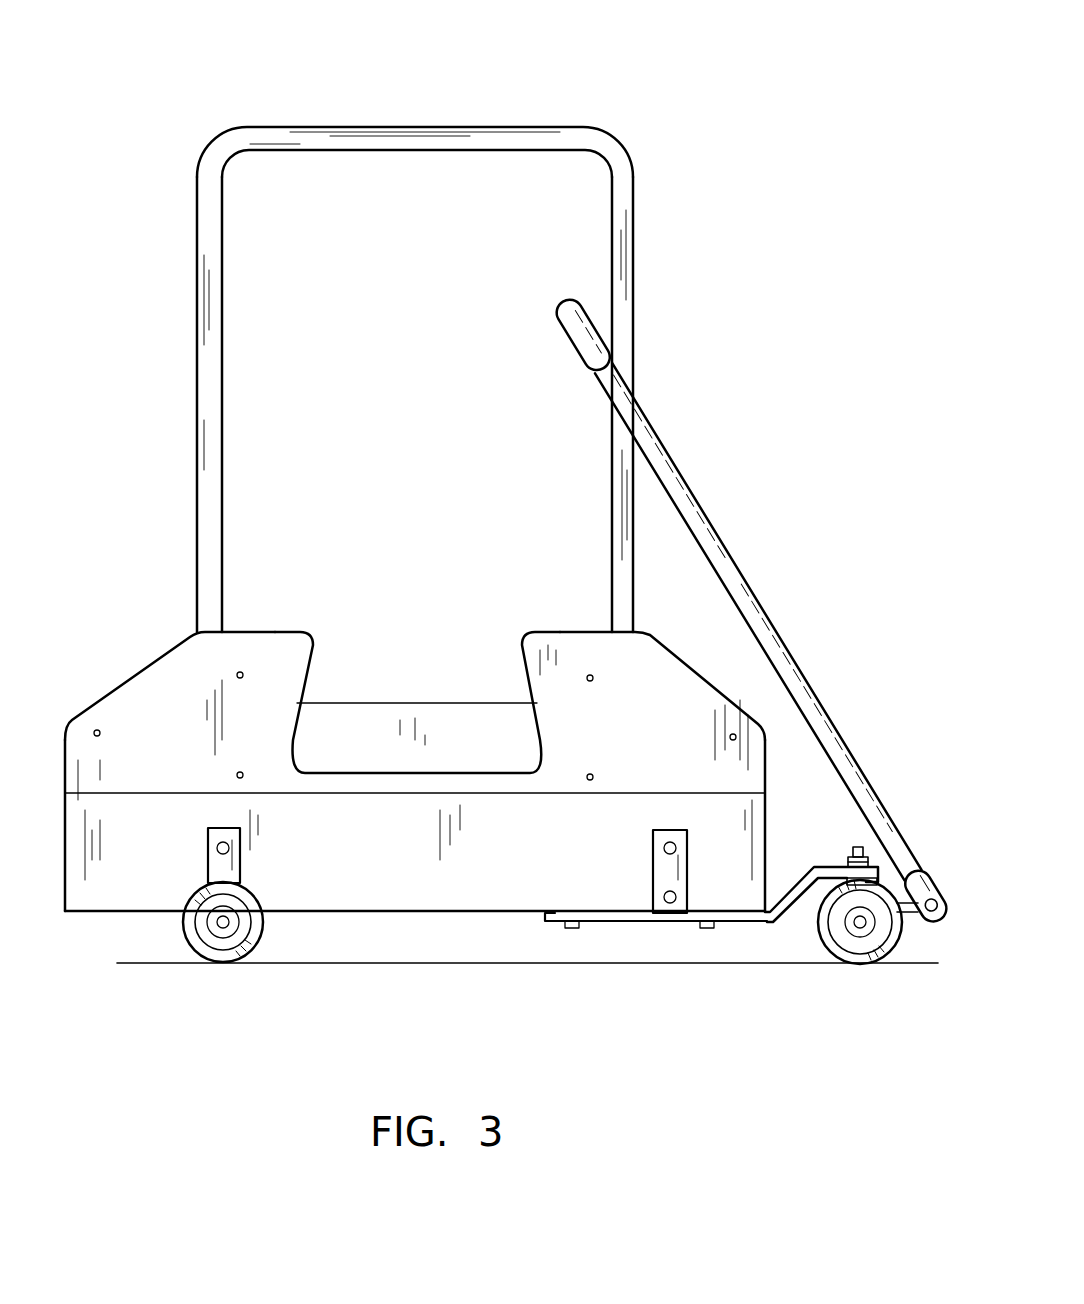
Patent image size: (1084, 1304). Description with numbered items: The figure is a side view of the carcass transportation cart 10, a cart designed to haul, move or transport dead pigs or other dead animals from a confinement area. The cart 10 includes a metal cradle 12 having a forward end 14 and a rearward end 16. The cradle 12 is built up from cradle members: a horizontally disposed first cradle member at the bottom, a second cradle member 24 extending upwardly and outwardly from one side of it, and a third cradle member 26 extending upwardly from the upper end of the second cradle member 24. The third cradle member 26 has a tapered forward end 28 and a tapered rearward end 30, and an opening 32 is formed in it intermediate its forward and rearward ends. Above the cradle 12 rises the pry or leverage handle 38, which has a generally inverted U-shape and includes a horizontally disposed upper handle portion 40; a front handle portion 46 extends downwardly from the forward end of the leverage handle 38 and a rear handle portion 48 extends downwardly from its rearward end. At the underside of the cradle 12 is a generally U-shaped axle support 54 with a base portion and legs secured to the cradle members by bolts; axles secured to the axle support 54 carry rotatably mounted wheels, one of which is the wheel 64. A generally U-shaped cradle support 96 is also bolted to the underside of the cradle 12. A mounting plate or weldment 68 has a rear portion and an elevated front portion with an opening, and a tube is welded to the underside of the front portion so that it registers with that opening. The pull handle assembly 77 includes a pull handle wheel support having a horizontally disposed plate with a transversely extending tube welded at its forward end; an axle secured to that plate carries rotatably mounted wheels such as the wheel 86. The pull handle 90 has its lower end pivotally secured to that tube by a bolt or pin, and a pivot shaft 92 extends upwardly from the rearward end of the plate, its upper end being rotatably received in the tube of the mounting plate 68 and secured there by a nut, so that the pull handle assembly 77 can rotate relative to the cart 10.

The carcass transportation cart 10 is at (747, 427).
The metal cradle 12 is at (118, 673).
The forward end 14 is at (782, 830).
The rearward end 16 is at (58, 877).
The second cradle member 24 is at (358, 872).
The third cradle member 26 is at (622, 742).
The tapered forward end 28 is at (710, 687).
The tapered rearward end 30 is at (152, 657).
The opening 32 is at (322, 667).
The pry or leverage handle 38 is at (523, 118).
The upper handle portion 40 is at (472, 143).
The front handle portion 46 is at (627, 323).
The rear handle portion 48 is at (212, 438).
The axle support 54 is at (203, 853).
The wheel 64 is at (237, 942).
The mounting plate or weldment 68 is at (733, 922).
The pull handle assembly 77 is at (848, 715).
The wheel 86 is at (873, 943).
The pull handle 90 is at (755, 610).
The pivot shaft 92 is at (860, 852).
The cradle support 96 is at (662, 852).